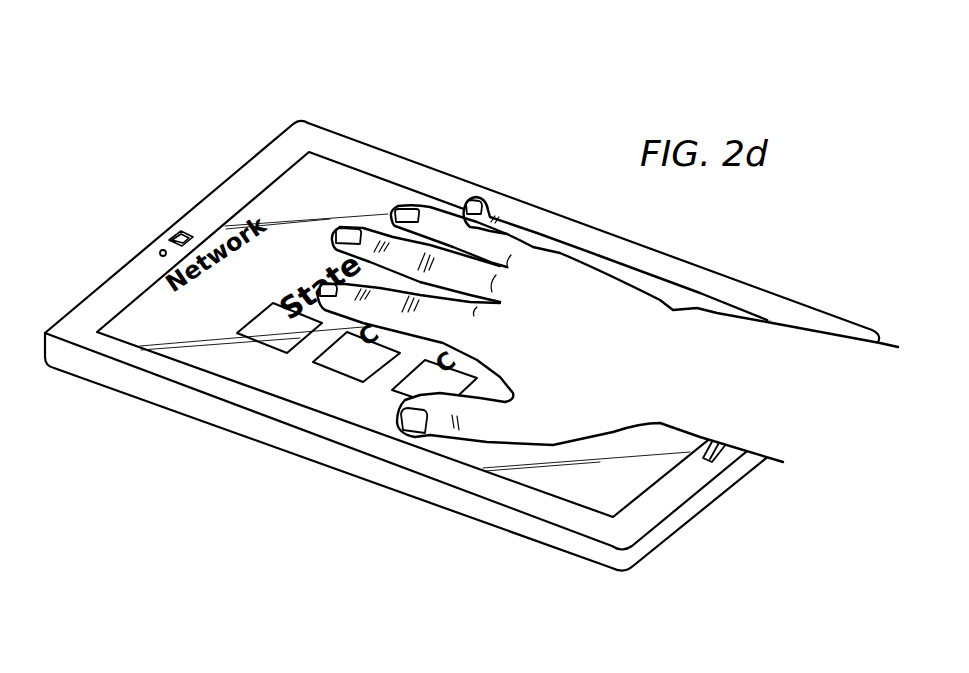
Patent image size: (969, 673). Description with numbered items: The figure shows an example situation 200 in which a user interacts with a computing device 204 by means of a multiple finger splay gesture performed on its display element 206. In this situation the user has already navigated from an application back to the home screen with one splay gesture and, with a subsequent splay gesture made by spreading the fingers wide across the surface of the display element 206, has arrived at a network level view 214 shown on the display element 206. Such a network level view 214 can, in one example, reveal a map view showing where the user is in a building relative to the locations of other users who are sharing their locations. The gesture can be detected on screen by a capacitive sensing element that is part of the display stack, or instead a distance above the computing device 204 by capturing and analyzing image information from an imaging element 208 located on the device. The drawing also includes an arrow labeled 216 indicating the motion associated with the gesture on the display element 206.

The example situation 200 is at (272, 86).
The computing device 204 is at (133, 370).
The display element 206 is at (368, 407).
The imaging element 208 is at (174, 231).
The network level view 214 is at (588, 467).
The touch gesture arrow 216 is at (362, 204).